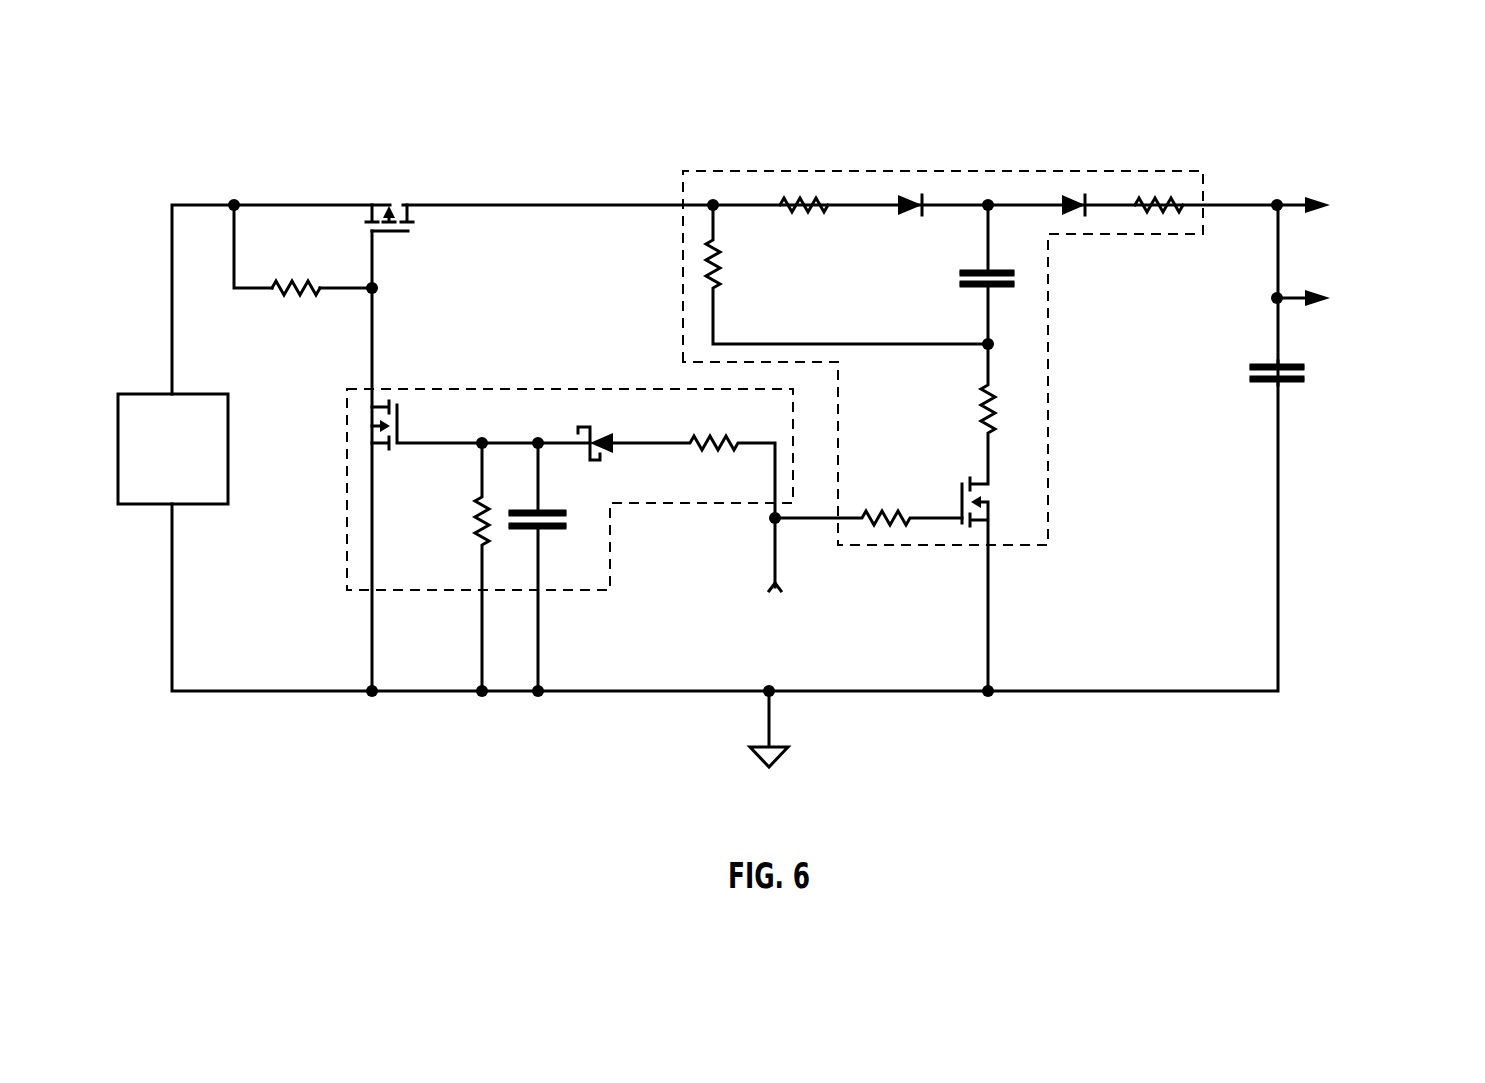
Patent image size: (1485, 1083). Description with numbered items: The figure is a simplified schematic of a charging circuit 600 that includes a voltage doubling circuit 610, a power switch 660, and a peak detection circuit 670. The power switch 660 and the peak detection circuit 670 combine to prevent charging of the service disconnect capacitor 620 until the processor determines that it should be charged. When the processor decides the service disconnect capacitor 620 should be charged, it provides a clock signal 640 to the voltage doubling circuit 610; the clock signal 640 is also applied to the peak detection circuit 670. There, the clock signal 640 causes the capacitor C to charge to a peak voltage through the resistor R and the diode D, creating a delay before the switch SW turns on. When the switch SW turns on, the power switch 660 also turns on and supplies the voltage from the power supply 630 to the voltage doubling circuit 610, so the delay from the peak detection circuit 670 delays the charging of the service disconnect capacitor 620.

The charging circuit 600 is at (236, 103).
The voltage doubling circuit 610 is at (883, 171).
The service disconnect capacitor 620 is at (1260, 396).
The power supply 630 is at (188, 488).
The clock signal 640 is at (773, 573).
The power switch 660 is at (392, 184).
The peak detection circuit 670 is at (502, 389).